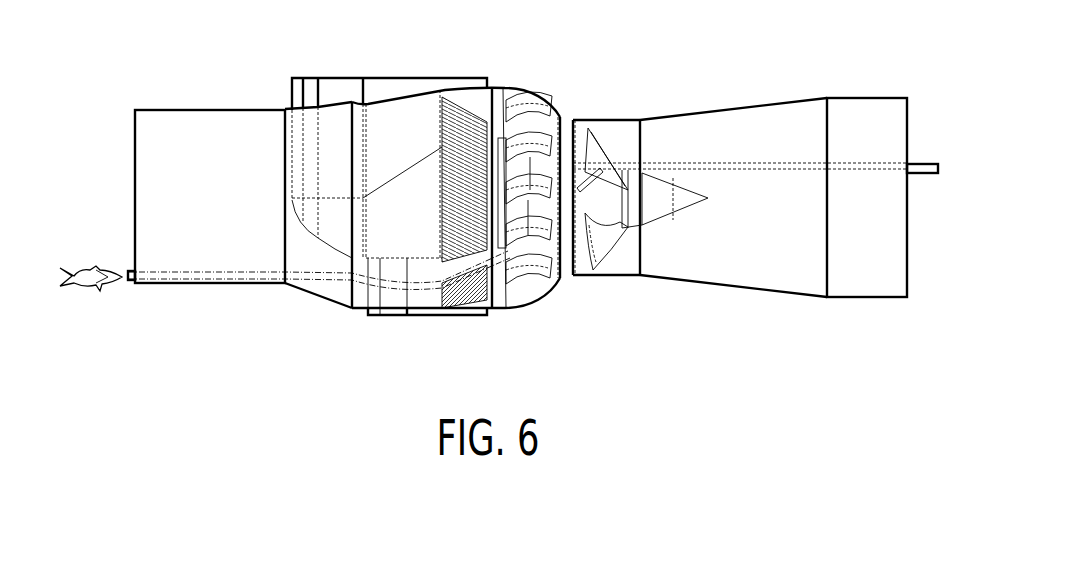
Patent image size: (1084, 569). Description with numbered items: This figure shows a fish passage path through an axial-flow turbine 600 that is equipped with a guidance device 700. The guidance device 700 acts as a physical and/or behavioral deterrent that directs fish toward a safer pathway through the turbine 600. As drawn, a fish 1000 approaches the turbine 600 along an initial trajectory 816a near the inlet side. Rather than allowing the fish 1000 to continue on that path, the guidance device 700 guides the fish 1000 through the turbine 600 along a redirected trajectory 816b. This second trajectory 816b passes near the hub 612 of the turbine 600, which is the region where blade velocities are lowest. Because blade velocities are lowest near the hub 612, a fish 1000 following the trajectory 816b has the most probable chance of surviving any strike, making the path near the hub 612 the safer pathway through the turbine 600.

The turbine 600 is at (770, 80).
The guidance device 700 is at (466, 88).
The trajectory 816a is at (187, 275).
The trajectory 816b is at (480, 268).
The hub 612 is at (632, 183).
The fish 1000 is at (100, 282).